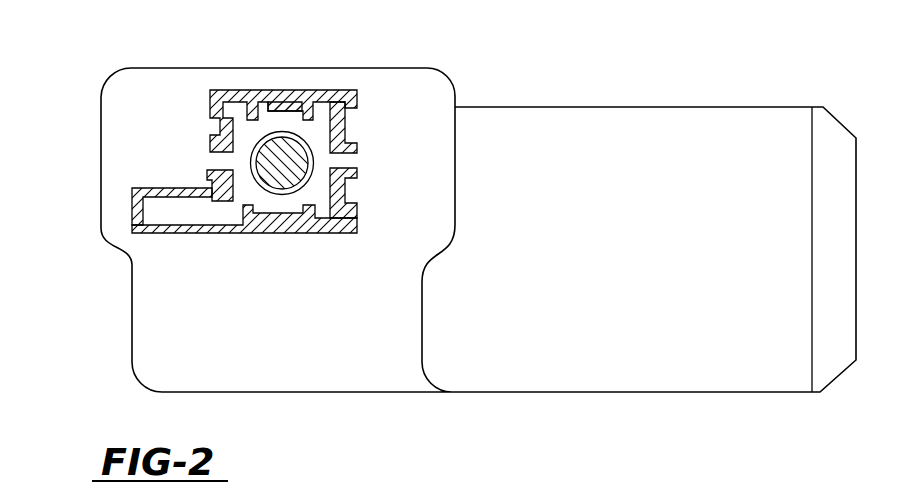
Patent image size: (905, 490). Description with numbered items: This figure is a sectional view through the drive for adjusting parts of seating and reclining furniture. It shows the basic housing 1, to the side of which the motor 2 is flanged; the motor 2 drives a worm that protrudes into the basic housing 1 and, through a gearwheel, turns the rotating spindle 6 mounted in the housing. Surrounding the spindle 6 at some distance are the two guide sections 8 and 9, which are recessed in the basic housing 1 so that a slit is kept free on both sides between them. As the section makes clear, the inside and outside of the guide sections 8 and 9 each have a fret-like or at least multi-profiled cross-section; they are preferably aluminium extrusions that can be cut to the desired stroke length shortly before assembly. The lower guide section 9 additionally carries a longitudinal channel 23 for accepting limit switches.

The basic housing 1 is at (363, 368).
The motor 2 is at (595, 367).
The spindle 6 is at (267, 150).
The guide section 8 is at (201, 167).
The lower guide section 9 is at (213, 234).
The longitudinal channel 23 is at (153, 217).